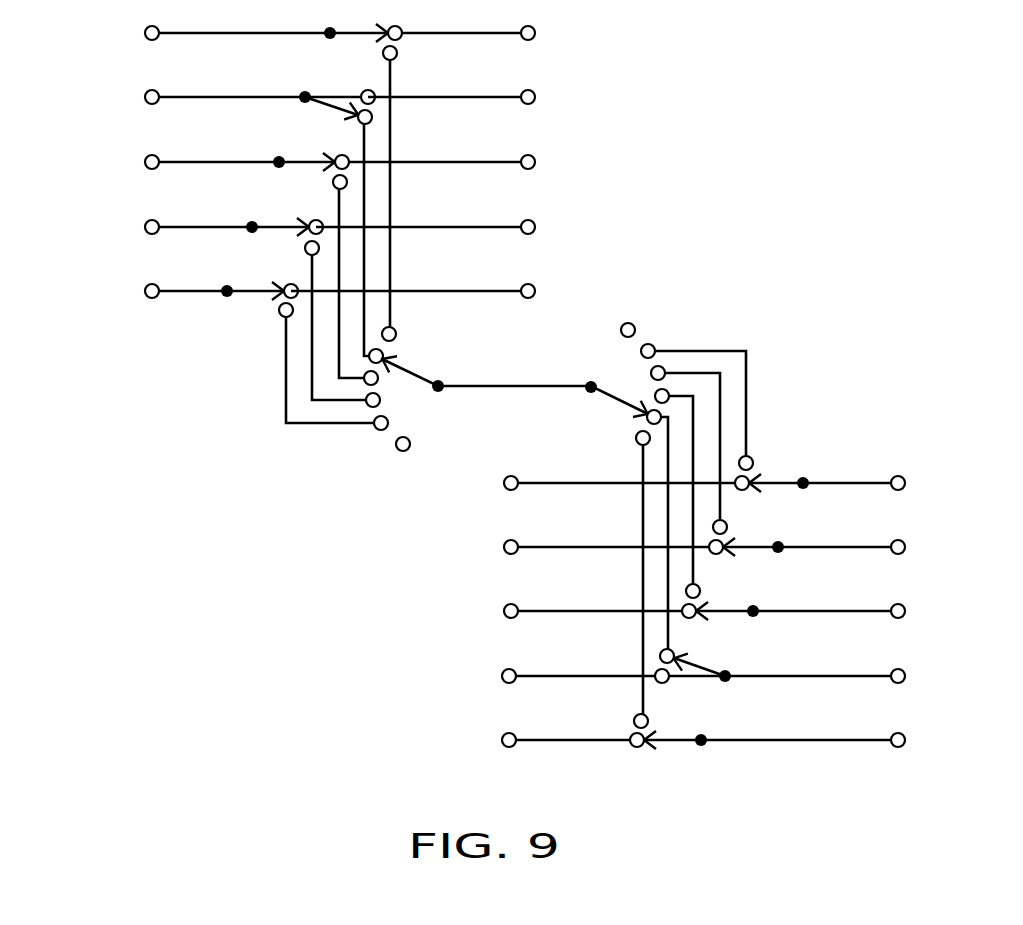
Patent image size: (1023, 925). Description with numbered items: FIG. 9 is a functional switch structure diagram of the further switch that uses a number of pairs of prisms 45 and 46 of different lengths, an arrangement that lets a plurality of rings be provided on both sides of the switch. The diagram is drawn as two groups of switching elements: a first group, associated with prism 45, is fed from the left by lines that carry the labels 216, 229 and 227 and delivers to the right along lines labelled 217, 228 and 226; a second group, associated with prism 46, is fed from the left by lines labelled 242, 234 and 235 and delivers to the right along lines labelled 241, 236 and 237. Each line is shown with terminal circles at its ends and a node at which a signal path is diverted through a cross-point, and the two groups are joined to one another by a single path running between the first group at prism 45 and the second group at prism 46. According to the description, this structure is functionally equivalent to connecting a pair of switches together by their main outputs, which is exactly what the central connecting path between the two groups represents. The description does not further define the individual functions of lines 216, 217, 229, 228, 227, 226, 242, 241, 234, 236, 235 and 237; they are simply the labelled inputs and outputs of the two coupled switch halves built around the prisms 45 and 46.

The input line 216 is at (145, 97).
The output line 217 is at (536, 95).
The input line 229 is at (145, 227).
The output line 228 is at (537, 225).
The input line 227 is at (145, 291).
The output line 226 is at (537, 289).
The prism 45 is at (405, 393).
The prism 46 is at (615, 377).
The input line 242 is at (504, 486).
The output line 241 is at (906, 483).
The input line 234 is at (503, 611).
The output line 236 is at (906, 611).
The input line 235 is at (503, 677).
The output line 237 is at (906, 676).